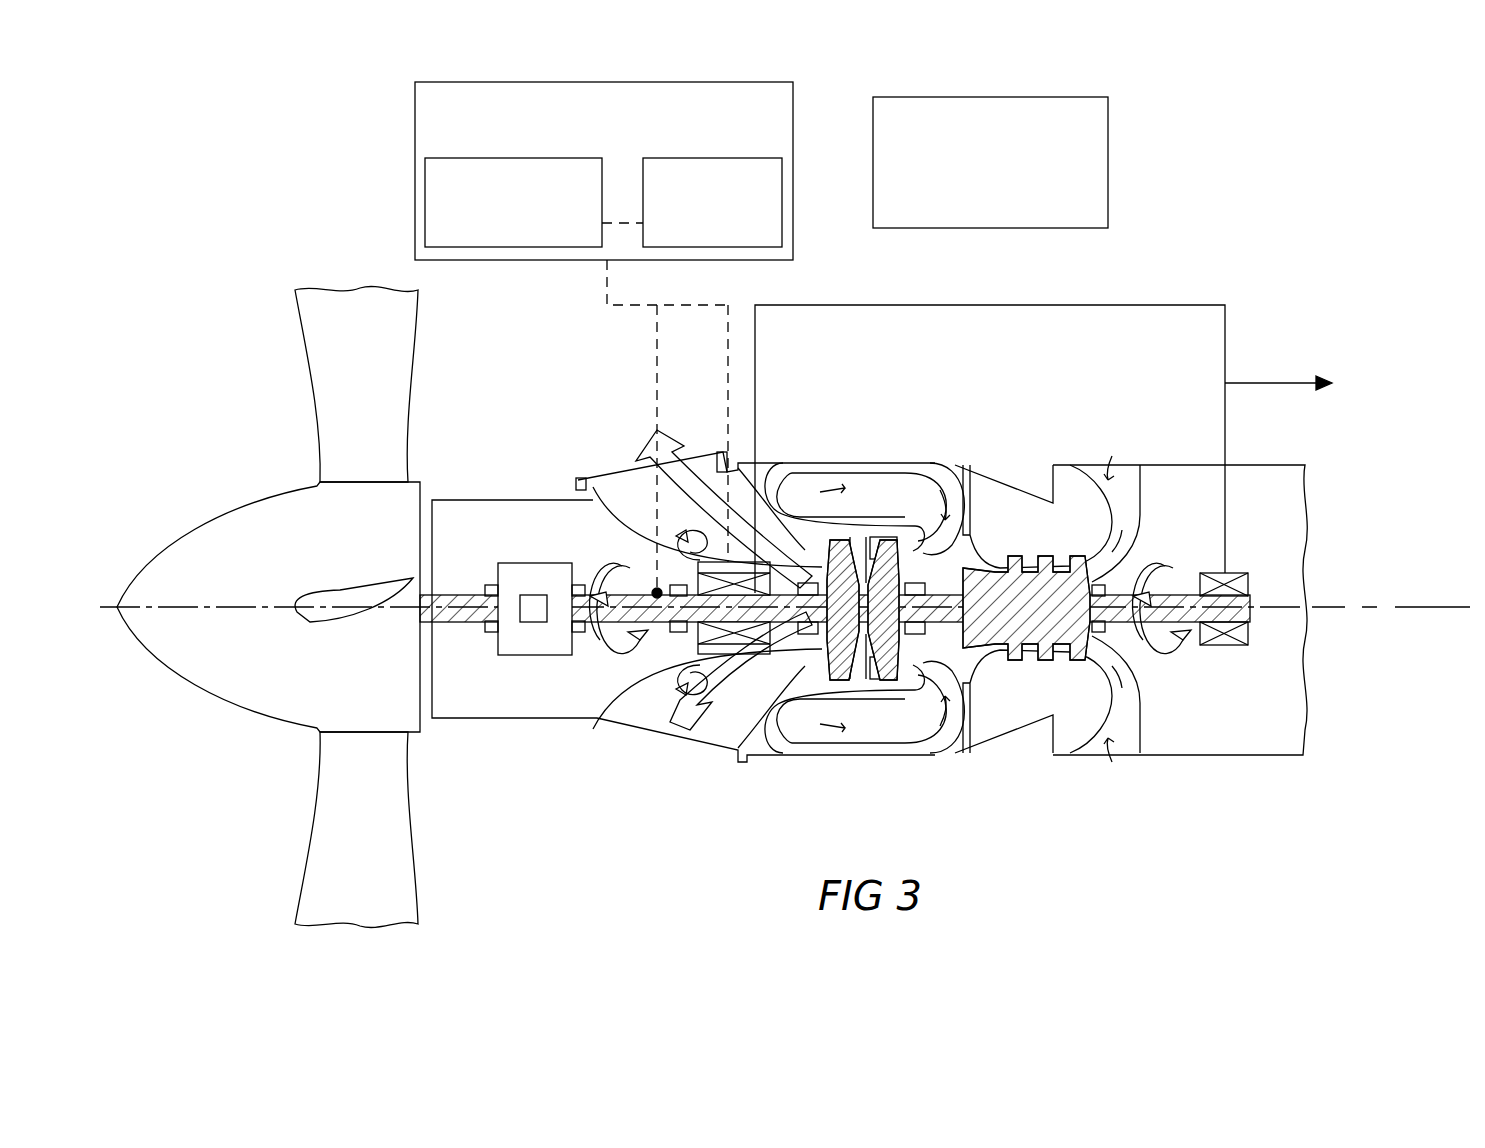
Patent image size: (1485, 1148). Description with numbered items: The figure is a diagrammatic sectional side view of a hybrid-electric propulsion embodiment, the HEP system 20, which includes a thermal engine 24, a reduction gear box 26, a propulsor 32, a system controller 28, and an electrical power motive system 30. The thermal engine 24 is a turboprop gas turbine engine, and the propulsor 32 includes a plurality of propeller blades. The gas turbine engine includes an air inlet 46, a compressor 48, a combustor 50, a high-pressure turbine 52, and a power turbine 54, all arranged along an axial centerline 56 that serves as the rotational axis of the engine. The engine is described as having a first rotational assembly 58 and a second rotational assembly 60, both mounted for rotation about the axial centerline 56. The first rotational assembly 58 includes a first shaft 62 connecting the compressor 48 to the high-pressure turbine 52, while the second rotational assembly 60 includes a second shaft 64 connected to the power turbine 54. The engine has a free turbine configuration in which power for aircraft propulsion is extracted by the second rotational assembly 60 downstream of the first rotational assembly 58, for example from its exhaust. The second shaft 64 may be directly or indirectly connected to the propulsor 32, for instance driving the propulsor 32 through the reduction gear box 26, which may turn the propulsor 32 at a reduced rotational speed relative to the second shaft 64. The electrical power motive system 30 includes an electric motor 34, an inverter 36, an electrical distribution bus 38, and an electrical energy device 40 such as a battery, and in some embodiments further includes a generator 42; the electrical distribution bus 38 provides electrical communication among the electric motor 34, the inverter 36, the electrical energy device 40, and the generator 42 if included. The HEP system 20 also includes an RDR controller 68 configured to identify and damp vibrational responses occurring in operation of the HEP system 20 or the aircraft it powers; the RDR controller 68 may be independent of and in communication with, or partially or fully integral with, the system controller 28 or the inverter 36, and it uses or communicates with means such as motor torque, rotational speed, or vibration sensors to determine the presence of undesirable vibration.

The HEP system 20 is at (1340, 108).
The thermal engine 24 is at (1283, 504).
The reduction gear box 26 is at (545, 563).
The system controller 28 is at (716, 148).
The electrical power motive system 30 is at (1190, 284).
The propulsor 32 is at (229, 470).
The electric motor 34 is at (728, 655).
The inverter 36 is at (724, 558).
The electrical distribution bus 38 is at (907, 305).
The electrical energy device 40 is at (1085, 206).
The generator 42 is at (1225, 646).
The air inlet 46 is at (1107, 463).
The compressor 48 is at (1030, 556).
The combustor 50 is at (880, 455).
The high-pressure turbine 52 is at (886, 682).
The power turbine 54 is at (838, 682).
The axial centerline 56 is at (1373, 610).
The first rotational assembly 58 is at (1028, 700).
The second rotational assembly 60 is at (782, 688).
The first shaft 62 is at (965, 664).
The second shaft 64 is at (633, 652).
The RDR controller 68 is at (336, 208).